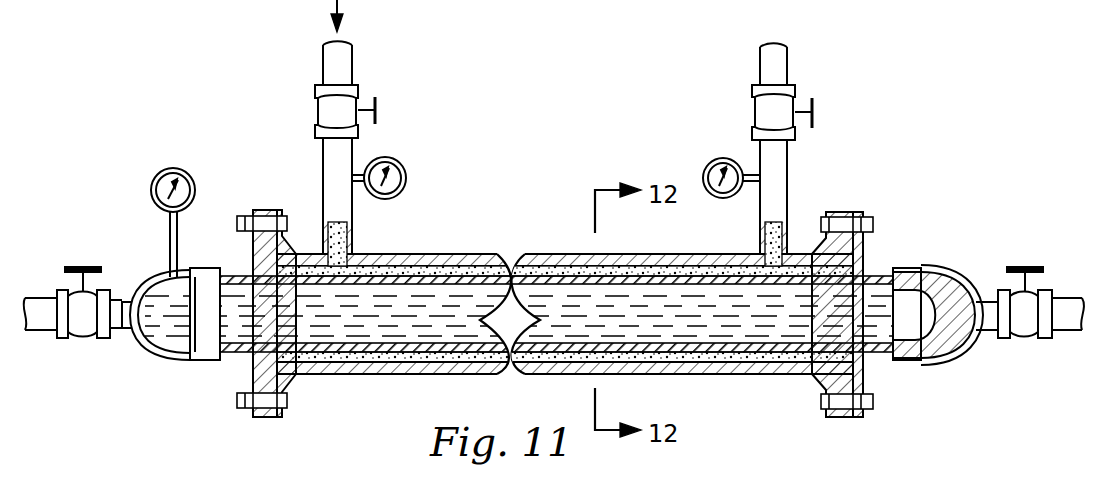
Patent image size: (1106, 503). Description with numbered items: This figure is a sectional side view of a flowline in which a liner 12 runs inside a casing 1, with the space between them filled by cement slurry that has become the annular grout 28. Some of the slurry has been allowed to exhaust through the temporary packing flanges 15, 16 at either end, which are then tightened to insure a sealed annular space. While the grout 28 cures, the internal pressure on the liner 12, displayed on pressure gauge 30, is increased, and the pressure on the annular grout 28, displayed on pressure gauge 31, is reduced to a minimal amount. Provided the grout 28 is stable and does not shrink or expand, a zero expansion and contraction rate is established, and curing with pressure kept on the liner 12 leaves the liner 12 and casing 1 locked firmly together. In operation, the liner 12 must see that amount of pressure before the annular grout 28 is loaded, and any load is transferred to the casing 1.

The casing 1 is at (550, 256).
The liner 12 is at (878, 360).
The temporary packing flange 15 is at (249, 258).
The temporary packing flange 16 is at (865, 258).
The annular grout 28 is at (425, 254).
The pressure gauge 30 is at (165, 171).
The pressure gauge 31 is at (399, 160).